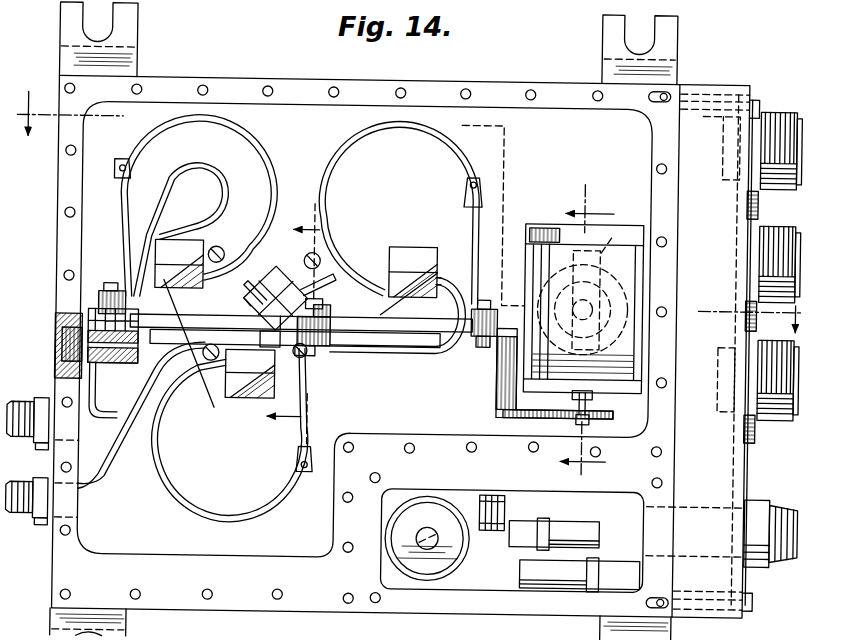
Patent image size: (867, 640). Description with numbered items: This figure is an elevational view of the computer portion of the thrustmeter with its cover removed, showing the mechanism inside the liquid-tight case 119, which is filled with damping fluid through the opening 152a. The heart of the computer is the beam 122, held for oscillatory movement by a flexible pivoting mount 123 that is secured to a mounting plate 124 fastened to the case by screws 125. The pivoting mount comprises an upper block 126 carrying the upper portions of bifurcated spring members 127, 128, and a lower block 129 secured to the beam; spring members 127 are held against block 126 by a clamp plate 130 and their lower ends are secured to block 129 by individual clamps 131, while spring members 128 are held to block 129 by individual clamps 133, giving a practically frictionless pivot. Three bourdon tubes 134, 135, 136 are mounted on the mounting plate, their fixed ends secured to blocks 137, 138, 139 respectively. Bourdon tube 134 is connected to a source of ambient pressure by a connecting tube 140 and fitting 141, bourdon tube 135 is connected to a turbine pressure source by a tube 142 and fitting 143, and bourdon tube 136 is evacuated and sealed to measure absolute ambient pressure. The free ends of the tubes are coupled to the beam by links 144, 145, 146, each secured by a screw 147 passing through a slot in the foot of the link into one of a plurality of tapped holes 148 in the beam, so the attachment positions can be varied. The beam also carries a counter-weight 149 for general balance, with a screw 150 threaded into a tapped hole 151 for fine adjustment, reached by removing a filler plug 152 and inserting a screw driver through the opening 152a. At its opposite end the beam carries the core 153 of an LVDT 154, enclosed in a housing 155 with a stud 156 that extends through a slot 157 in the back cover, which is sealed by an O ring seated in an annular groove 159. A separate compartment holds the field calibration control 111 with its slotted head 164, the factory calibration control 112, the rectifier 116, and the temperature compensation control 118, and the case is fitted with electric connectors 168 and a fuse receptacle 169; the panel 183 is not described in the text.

The field calibration control 111 is at (450, 556).
The factory calibration control 112 is at (540, 519).
The rectifier 116 is at (508, 482).
The temperature compensation control 118 is at (560, 586).
The housing 119 is at (243, 84).
The beam 122 is at (424, 348).
The flexible pivoting mount 123 is at (246, 304).
The mounting plate 124 is at (283, 287).
The screws 125 is at (219, 250).
The block 126 is at (275, 298).
The spring members 127 is at (314, 293).
The spring members 128 is at (256, 294).
The block member 129 is at (266, 350).
The clamp plate 130 is at (323, 303).
The clamps 131 is at (295, 337).
The clamps 133 is at (305, 358).
The bourdon tube 134 is at (260, 135).
The bourdon tube 135 is at (332, 155).
The bourdon tube 136 is at (171, 493).
The block 137 is at (168, 282).
The block 138 is at (402, 270).
The block 139 is at (225, 385).
The connecting tube 140 is at (186, 178).
The fitting 141 is at (47, 403).
The tube 142 is at (465, 292).
The fitting 143 is at (38, 530).
The link 144 is at (118, 192).
The link 145 is at (466, 199).
The link 146 is at (313, 433).
The screws 147 is at (105, 287).
The tapped holes 148 is at (330, 312).
The counter-weight 149 is at (150, 375).
The screw 150 is at (138, 353).
The tapped hole 151 is at (100, 390).
The filler plug 152 is at (55, 337).
The opening 152a is at (77, 318).
The core 153 is at (612, 232).
The LVDT 154 is at (555, 222).
The housing 155 is at (555, 222).
The stud 156 is at (548, 226).
The slot 157 is at (545, 270).
The annular groove 159 is at (605, 248).
The slotted head 164 is at (430, 527).
The electric connectors 168 is at (779, 186).
The fuse receptacle 169 is at (764, 495).
The panel 183 is at (485, 590).